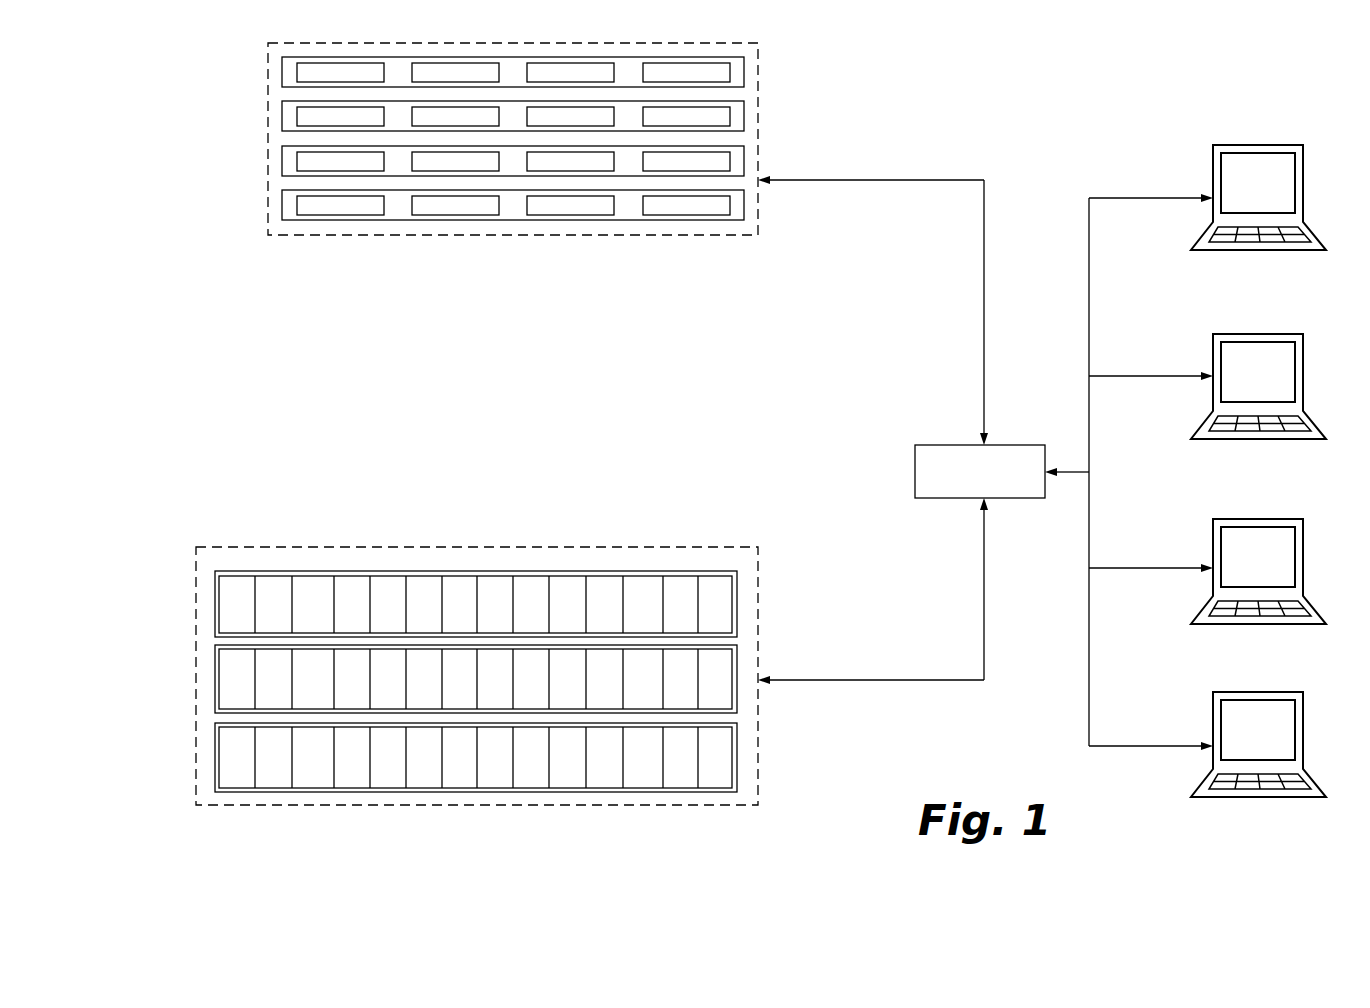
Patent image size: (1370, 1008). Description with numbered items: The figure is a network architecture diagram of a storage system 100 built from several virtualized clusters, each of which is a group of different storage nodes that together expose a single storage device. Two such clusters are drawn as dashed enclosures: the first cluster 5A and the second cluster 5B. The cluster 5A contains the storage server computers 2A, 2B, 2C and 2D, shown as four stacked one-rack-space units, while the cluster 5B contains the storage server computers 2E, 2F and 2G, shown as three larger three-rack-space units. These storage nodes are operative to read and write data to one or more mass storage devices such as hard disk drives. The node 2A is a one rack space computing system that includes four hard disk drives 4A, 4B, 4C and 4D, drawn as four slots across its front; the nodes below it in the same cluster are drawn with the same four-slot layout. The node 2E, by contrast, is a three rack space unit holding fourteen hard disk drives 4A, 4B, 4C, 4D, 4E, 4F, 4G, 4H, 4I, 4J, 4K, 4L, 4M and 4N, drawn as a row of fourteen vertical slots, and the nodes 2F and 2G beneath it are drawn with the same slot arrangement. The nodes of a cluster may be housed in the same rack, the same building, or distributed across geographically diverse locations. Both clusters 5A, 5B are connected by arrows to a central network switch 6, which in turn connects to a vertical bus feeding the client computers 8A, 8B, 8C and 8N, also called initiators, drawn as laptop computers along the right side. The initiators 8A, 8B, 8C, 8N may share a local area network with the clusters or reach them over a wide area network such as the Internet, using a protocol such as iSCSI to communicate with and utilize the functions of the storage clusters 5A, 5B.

The storage system 100 is at (1055, 118).
The virtualized cluster 5A is at (752, 63).
The virtualized cluster 5B is at (750, 571).
The storage server computer 2A is at (547, 94).
The storage server computer 2B is at (736, 126).
The storage server computer 2C is at (740, 170).
The storage server computer 2D is at (736, 215).
The storage server computer 2E is at (512, 620).
The storage server computer 2F is at (737, 688).
The storage server computer 2G is at (737, 763).
The hard disk drive 4A is at (340, 73).
The hard disk drive 4B is at (455, 73).
The hard disk drive 4C is at (570, 73).
The hard disk drive 4D is at (686, 73).
The hard disk drive 4E is at (388, 606).
The hard disk drive 4F is at (424, 606).
The hard disk drive 4G is at (458, 606).
The hard disk drive 4H is at (495, 606).
The hard disk drive 4I is at (531, 606).
The hard disk drive 4J is at (567, 606).
The hard disk drive 4K is at (604, 606).
The hard disk drive 4L is at (642, 606).
The hard disk drive 4M is at (680, 606).
The hard disk drive 4N is at (715, 606).
The network switch 6 is at (1012, 498).
The client computer 8A is at (1266, 223).
The client computer 8B is at (1266, 412).
The client computer 8C is at (1266, 597).
The client computer 8N is at (1267, 770).